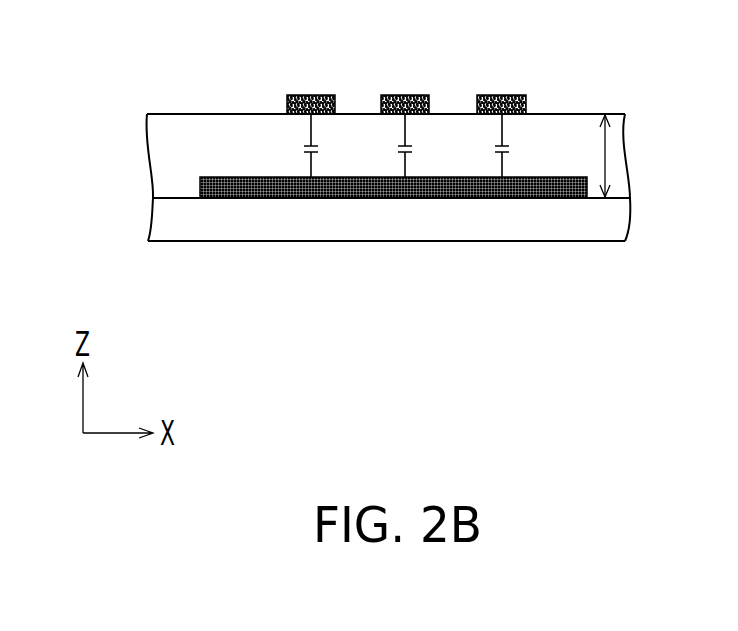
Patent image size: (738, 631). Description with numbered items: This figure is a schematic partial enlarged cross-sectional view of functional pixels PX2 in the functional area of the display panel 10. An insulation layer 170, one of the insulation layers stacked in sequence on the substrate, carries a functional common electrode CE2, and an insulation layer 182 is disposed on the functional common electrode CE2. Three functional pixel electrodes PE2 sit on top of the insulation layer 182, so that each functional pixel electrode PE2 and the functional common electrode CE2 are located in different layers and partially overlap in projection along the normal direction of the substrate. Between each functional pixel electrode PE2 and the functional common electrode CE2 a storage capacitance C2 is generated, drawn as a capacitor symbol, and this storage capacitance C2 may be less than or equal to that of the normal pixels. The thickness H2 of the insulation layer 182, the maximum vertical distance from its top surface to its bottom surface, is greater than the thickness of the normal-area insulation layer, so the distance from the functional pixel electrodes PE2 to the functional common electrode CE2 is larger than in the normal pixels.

The insulation layer 170 is at (165, 217).
The insulation layer 182 is at (158, 153).
The functional pixel PX2 is at (417, 158).
The functional pixel electrode PE2 is at (407, 95).
The functional common electrode CE2 is at (325, 198).
The storage capacitance C2 is at (297, 148).
The thickness of the insulation layer 182 H2 is at (603, 152).
The display panel 10 is at (718, 449).